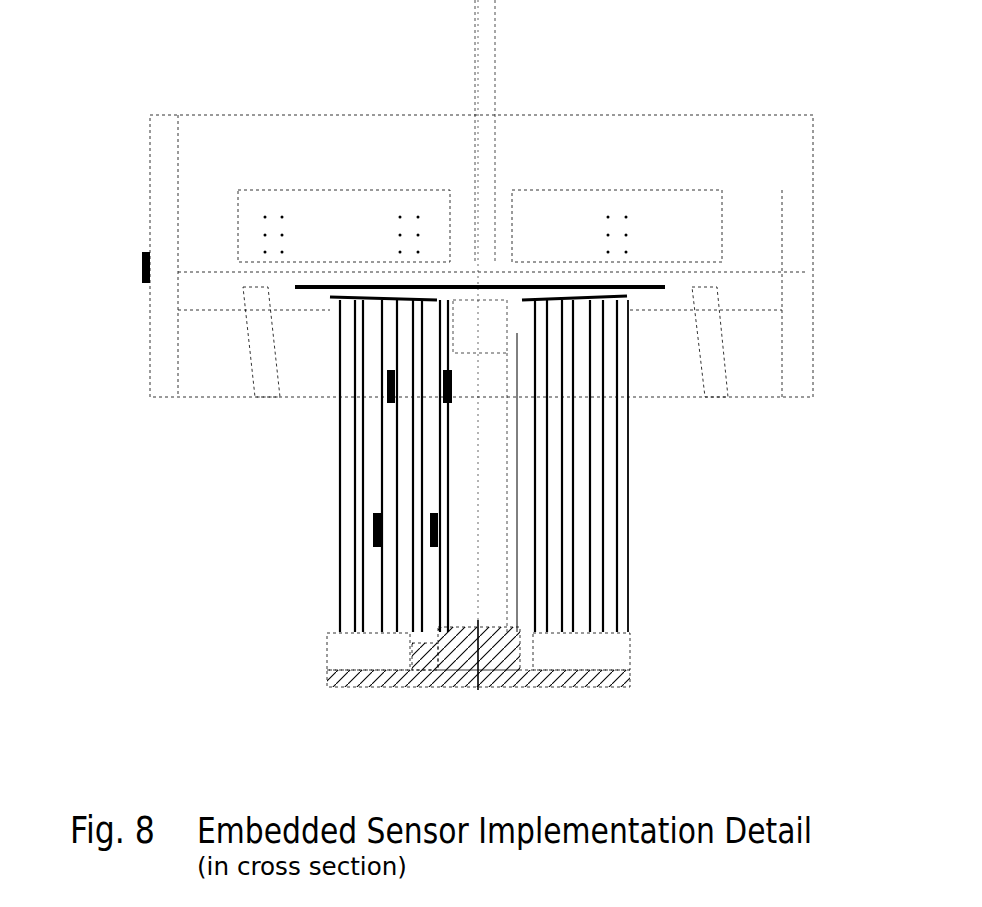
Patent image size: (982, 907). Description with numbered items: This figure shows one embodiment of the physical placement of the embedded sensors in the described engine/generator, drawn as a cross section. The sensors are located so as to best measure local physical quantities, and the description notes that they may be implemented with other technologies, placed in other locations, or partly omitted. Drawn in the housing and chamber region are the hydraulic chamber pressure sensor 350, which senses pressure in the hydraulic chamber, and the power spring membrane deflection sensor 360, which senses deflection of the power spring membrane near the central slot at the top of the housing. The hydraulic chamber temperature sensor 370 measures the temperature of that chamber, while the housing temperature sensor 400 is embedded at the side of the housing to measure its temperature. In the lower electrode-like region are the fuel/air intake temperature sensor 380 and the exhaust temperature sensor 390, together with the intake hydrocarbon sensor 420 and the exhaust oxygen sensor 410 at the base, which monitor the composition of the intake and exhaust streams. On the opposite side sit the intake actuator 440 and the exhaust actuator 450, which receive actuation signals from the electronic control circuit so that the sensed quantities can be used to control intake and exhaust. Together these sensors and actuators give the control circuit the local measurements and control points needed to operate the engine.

The hydraulic chamber pressure sensor 350 is at (814, 306).
The power spring membrane deflection sensor 360 is at (476, 112).
The hydraulic chamber temperature sensor 370 is at (250, 345).
The fuel/air intake temperature sensor 380 is at (337, 425).
The exhaust temperature sensor 390 is at (340, 490).
The housing temperature sensor 400 is at (140, 256).
The exhaust oxygen sensor 410 is at (330, 625).
The intake hydrocarbon sensor 420 is at (335, 573).
The intake actuator 440 is at (633, 415).
The exhaust actuator 450 is at (633, 470).